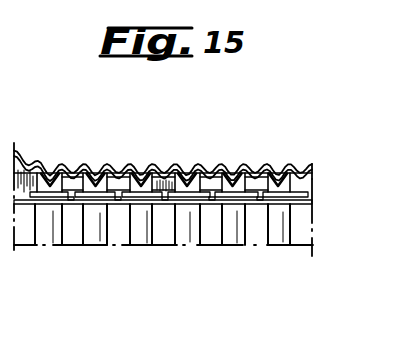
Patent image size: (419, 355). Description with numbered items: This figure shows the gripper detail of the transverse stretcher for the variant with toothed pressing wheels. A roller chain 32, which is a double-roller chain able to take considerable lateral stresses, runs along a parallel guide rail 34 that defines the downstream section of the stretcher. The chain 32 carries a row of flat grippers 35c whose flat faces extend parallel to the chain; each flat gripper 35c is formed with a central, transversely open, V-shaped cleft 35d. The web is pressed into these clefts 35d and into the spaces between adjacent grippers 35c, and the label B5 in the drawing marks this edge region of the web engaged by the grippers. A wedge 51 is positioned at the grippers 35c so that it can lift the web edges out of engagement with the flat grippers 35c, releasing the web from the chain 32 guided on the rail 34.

The cleft 35d is at (50, 160).
The flat gripper 35c is at (273, 168).
The support tooth B5 is at (87, 157).
The wedge 51 is at (117, 183).
The roller chain 32 is at (150, 263).
The parallel guide rail 34 is at (303, 233).